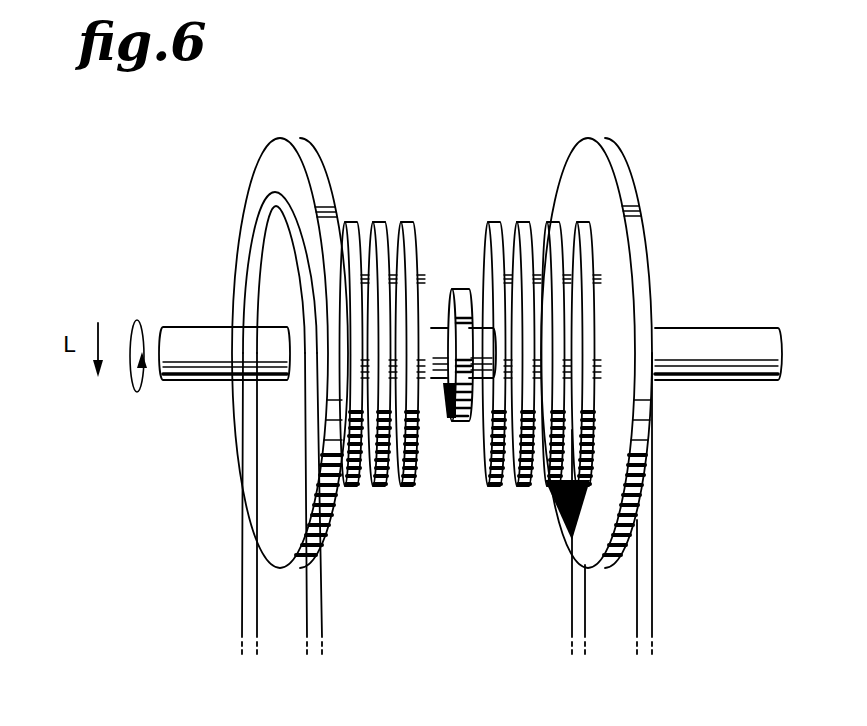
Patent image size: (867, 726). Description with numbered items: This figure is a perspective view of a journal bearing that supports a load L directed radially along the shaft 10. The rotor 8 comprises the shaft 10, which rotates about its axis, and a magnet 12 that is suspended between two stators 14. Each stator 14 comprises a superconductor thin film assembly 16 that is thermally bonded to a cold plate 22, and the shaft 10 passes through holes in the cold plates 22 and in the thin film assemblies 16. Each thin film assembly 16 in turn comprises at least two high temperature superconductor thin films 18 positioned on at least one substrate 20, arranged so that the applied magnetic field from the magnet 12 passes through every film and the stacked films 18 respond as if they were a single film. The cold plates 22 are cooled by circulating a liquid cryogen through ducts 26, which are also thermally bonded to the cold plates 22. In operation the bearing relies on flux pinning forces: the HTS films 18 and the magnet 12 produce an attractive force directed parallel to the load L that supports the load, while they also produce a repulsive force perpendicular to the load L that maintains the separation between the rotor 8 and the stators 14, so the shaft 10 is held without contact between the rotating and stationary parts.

The rotor 8 is at (420, 99).
The shaft 10 is at (723, 335).
The magnet 12 is at (462, 292).
The stator 14 is at (415, 98).
The superconductor thin film assembly 16 is at (470, 450).
The high temperature superconductor thin film 18 is at (492, 440).
The substrate 20 is at (530, 224).
The cold plate 22 is at (263, 183).
The duct 26 is at (248, 590).